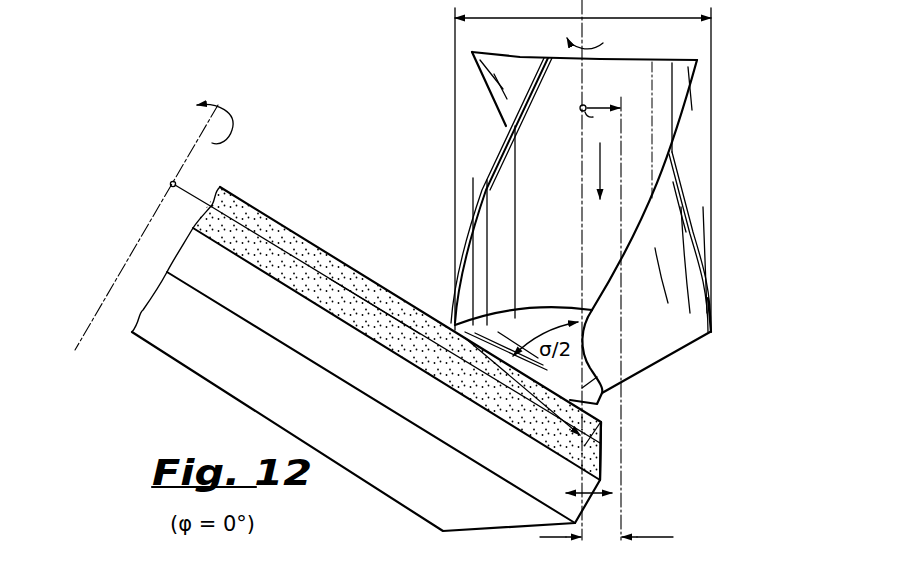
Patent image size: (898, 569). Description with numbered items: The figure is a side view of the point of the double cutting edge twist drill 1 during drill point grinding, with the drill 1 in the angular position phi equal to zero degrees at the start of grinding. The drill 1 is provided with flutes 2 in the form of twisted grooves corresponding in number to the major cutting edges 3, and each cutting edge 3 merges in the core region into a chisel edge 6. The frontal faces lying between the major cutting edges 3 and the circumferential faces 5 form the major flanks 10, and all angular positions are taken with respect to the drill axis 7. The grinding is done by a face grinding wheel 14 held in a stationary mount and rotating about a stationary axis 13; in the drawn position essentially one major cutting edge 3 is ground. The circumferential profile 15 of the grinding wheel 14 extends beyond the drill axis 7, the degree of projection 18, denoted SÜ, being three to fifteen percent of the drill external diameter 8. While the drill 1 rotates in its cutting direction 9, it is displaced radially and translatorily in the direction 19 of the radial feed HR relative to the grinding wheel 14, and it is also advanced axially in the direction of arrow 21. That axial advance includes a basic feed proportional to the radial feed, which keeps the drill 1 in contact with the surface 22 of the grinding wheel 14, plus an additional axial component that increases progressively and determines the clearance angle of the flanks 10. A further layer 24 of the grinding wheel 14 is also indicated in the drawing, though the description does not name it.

The twist drill 1 is at (689, 179).
The flute 2 is at (673, 208).
The major cutting edge 3 is at (685, 349).
The circumferential face 5 is at (499, 182).
The chisel edge 6 is at (594, 404).
The drill axis 7 is at (580, 237).
The drill external diameter 8 is at (658, 19).
The cutting direction 9 is at (603, 43).
The major flank 10 is at (491, 334).
The stationary axis 13 is at (192, 152).
The face grinding wheel 14 is at (333, 250).
The circumferential profile 15 is at (602, 456).
The degree of projection 18 is at (593, 495).
The direction of radial feed 19 is at (610, 91).
The arrow of axial advance 21 is at (598, 175).
The surface of grinding wheel 22 is at (418, 307).
The abrasive layer 24 is at (363, 303).